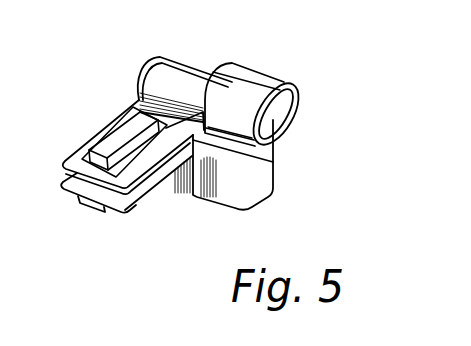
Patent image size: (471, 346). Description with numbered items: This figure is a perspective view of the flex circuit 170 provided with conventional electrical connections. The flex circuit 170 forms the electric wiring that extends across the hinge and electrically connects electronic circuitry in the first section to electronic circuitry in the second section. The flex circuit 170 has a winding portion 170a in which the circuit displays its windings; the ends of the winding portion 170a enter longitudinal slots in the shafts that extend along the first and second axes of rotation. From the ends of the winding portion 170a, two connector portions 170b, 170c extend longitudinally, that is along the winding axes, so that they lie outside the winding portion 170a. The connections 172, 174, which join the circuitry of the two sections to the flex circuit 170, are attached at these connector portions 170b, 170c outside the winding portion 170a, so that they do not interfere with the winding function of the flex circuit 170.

The flex circuit 170 is at (300, 92).
The winding portion 170a is at (300, 65).
The connector portion 170b is at (227, 53).
The connector portion 170c is at (187, 202).
The connection 172 is at (110, 150).
The connection 174 is at (90, 212).